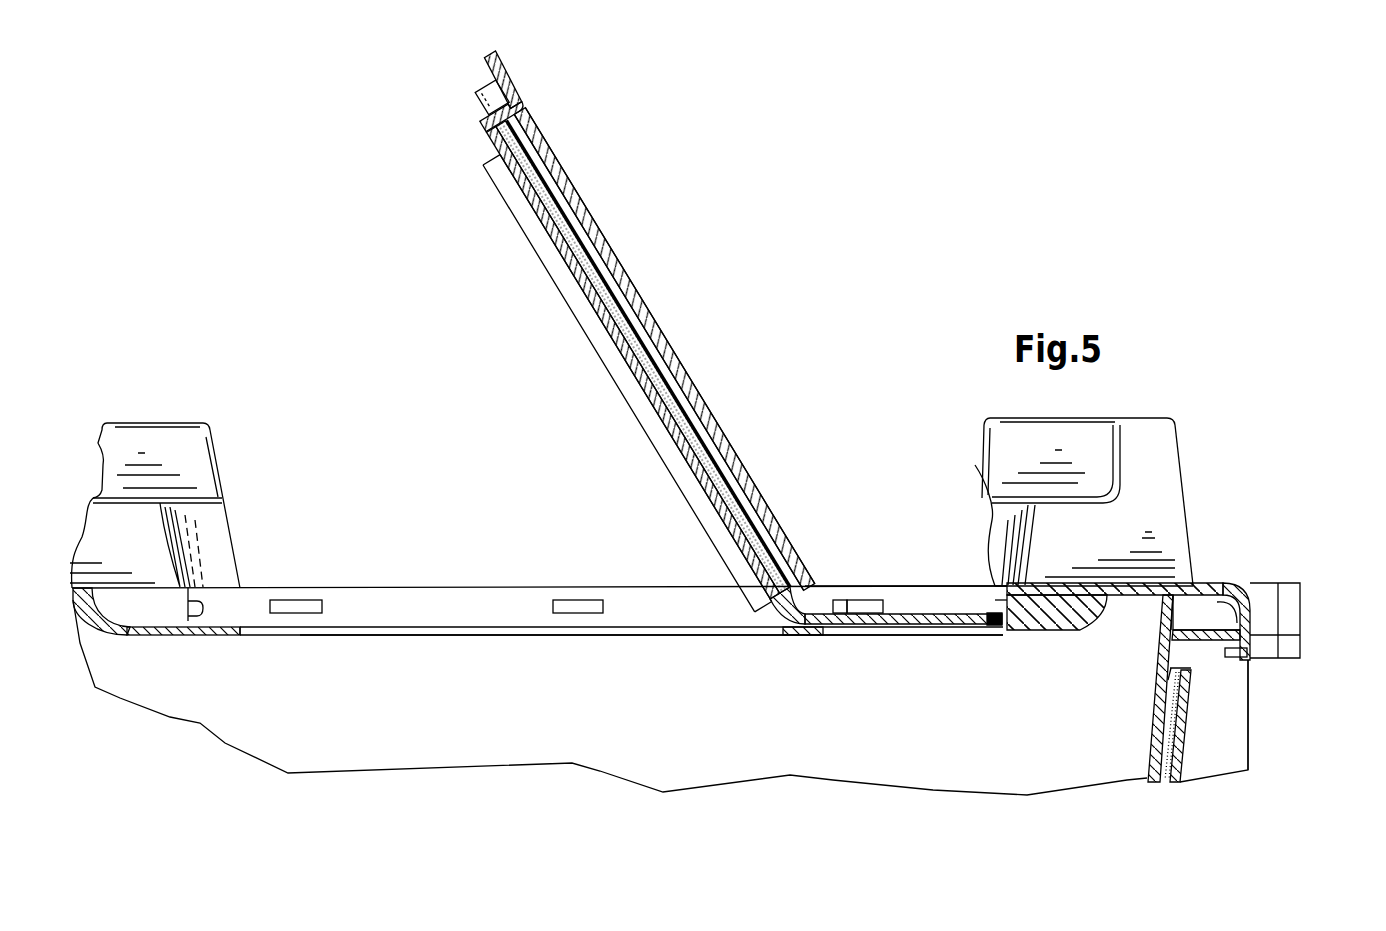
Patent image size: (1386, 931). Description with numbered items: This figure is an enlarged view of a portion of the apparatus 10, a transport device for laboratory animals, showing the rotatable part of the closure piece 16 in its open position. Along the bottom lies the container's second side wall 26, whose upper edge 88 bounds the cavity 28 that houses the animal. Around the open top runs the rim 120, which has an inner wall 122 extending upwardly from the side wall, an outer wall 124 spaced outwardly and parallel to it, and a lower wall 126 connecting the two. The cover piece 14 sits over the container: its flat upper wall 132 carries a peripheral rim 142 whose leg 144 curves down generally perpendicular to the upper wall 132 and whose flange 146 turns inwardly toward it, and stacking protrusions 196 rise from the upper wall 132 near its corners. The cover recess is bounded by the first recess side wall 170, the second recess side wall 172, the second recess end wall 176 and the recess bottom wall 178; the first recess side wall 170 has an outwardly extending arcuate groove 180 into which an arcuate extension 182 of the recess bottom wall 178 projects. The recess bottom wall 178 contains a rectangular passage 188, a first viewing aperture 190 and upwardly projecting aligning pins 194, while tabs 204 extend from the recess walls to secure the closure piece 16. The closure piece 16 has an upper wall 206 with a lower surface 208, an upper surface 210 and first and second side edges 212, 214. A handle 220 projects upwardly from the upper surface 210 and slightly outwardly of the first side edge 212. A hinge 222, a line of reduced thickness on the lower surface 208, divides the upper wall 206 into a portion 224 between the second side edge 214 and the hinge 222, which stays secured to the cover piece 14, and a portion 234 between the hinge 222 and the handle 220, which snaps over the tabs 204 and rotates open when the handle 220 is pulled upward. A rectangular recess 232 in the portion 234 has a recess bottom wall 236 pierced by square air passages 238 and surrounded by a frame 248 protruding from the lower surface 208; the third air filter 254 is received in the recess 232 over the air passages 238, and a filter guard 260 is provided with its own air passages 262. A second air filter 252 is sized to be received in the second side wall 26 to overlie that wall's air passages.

The apparatus 10 is at (210, 170).
The cover piece 14 is at (1130, 578).
The closure piece 16 is at (902, 555).
The second side wall 26 is at (1147, 755).
The cavity 28 is at (676, 770).
The upper edge 88 is at (1160, 650).
The rim 120 is at (1212, 652).
The inner wall 122 is at (1160, 613).
The outer wall 124 is at (1236, 585).
The lower wall 126 is at (1207, 585).
The upper wall 132 is at (1190, 578).
The rim 142 is at (1270, 618).
The leg 144 is at (1262, 640).
The flange 146 is at (1240, 660).
The first recess side wall 170 is at (235, 590).
The second recess side wall 172 is at (1005, 585).
The second recess end wall 176 is at (493, 597).
The recess bottom wall 178 is at (228, 637).
The arcuate groove 180 is at (137, 611).
The arcuate extension 182 is at (127, 637).
The rectangular passage 188 is at (428, 625).
The first viewing aperture 190 is at (935, 645).
The aligning pins 194 is at (840, 600).
The stacking protrusions 196 is at (1160, 410).
The tabs 204 is at (204, 609).
The upper wall 206 is at (958, 585).
The lower surface 208 is at (815, 636).
The upper surface 210 is at (893, 600).
The first side edge 212 is at (492, 118).
The second side edge 214 is at (1000, 630).
The handle 220 is at (505, 63).
The hinge 222 is at (790, 625).
The portion 224 is at (870, 610).
The rectangular recess 232 is at (550, 236).
The portion 234 is at (625, 375).
The recess bottom wall 236 is at (486, 178).
The air passages 238 is at (578, 282).
The frame 248 is at (735, 588).
The second air filter 252 is at (1195, 760).
The third air filter 254 is at (582, 206).
The filter guard 260 is at (688, 352).
The air passages 262 is at (755, 418).